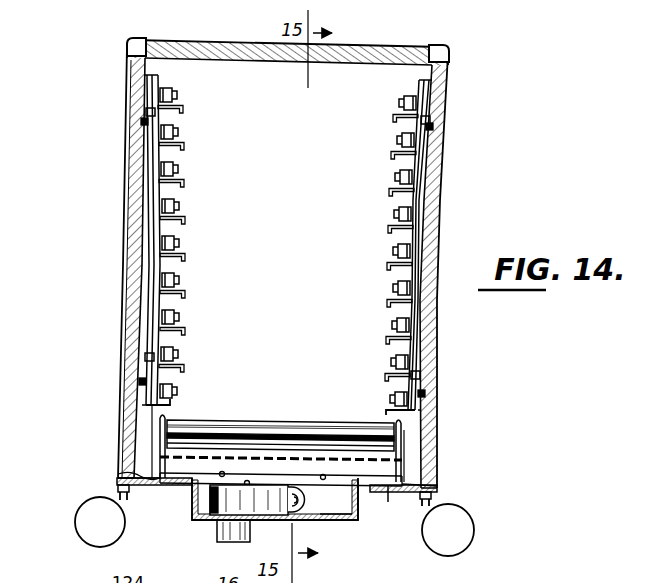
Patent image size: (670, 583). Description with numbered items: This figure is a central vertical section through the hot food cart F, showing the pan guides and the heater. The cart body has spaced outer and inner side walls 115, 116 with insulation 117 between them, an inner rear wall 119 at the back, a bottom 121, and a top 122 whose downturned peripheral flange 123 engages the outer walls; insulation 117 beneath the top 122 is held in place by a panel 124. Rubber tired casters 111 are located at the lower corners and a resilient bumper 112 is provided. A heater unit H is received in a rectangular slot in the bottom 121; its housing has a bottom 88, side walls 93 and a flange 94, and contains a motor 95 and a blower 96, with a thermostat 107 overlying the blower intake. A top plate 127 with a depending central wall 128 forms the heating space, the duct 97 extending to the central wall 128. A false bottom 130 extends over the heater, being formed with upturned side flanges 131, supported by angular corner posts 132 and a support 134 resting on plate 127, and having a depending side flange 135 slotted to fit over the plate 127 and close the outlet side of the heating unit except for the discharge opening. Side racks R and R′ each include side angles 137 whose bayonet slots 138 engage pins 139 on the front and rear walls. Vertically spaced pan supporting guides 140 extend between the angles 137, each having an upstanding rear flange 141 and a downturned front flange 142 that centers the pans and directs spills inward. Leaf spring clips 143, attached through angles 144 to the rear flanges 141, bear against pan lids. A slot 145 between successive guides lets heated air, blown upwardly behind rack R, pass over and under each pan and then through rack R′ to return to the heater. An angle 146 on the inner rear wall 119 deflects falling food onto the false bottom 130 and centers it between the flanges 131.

The hot food cart F is at (269, 255).
The side rack R is at (288, 239).
The side rack R′ is at (288, 239).
The heater unit H is at (357, 523).
The bottom 88 is at (279, 517).
The side walls 93 is at (285, 518).
The flange 94 is at (117, 487).
The motor 95 is at (228, 538).
The blower 96 is at (208, 512).
The duct 97 is at (252, 523).
The thermostat 107 is at (279, 500).
The casters 111 is at (78, 523).
The bumper 112 is at (118, 462).
The outer side wall 115 is at (124, 240).
The inner side wall 116 is at (281, 267).
The insulation 117 is at (281, 267).
The inner rear wall 119 is at (285, 245).
The bottom 121 is at (174, 489).
The top 122 is at (287, 55).
The downturned peripheral flange 123 is at (126, 44).
The panel 124 is at (378, 64).
The top plate 127 is at (318, 440).
The central wall 128 is at (334, 514).
The false bottom 130 is at (280, 428).
The upturned side flanges 131 is at (169, 427).
The angular corner posts 132 is at (362, 506).
The support 134 is at (165, 458).
The depending side flange 135 is at (110, 466).
The side angles 137 is at (150, 326).
The bayonet slots 138 is at (148, 121).
The pins 139 is at (150, 112).
The pan supporting guides 140 is at (173, 101).
The upstanding rear flanges 141 is at (288, 244).
The downturned flange 142 is at (183, 146).
The leaf spring clips 143 is at (288, 244).
The angle 144 is at (288, 244).
The slot 145 is at (282, 245).
The angle 146 is at (362, 443).